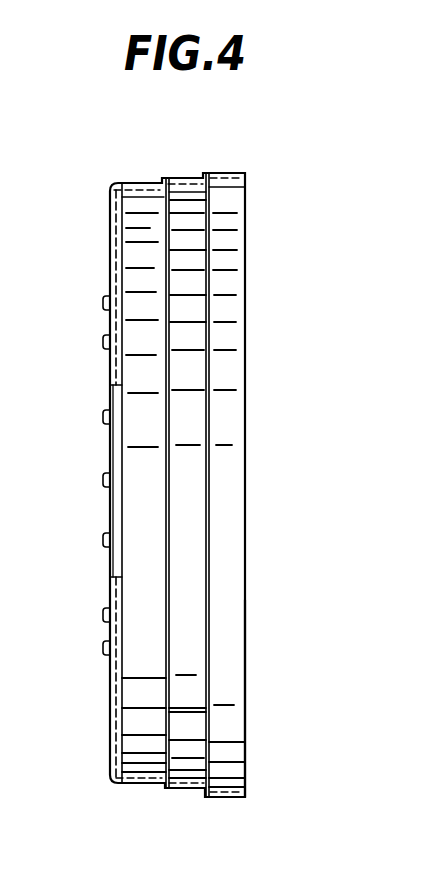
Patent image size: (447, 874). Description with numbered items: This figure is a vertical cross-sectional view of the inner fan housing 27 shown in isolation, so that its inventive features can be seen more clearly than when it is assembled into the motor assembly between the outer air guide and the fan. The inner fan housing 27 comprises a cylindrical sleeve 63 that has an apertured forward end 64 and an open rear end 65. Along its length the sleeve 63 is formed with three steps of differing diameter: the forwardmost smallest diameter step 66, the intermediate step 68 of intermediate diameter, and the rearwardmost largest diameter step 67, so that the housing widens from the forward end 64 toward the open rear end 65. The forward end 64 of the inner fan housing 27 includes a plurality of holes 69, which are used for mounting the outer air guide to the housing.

The inner fan housing 27 is at (244, 797).
The cylindrical sleeve 63 is at (246, 348).
The apertured forward end 64 is at (118, 700).
The open rear end 65 is at (246, 676).
The forwardmost smallest diameter step 66 is at (114, 231).
The rearwardmost largest diameter step 67 is at (230, 195).
The intermediate step 68 is at (183, 178).
The holes 69 is at (103, 304).